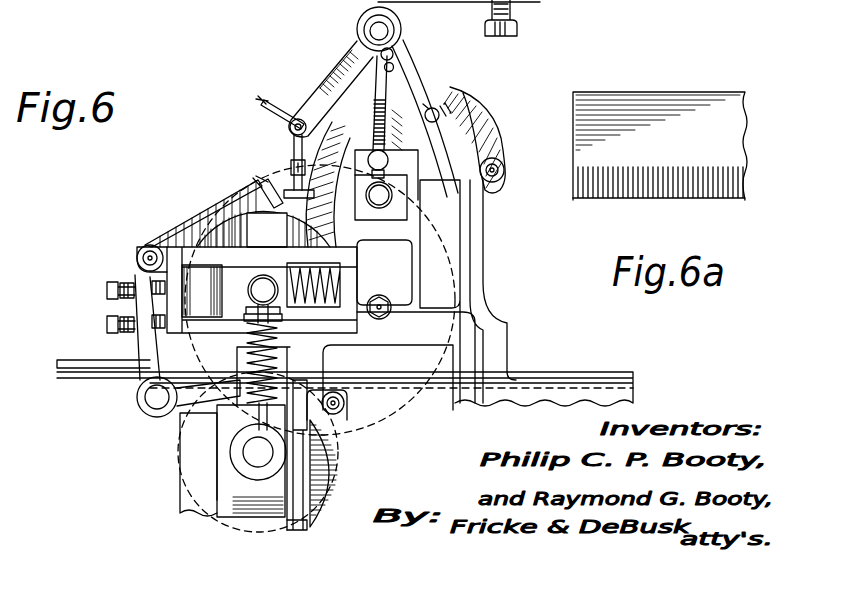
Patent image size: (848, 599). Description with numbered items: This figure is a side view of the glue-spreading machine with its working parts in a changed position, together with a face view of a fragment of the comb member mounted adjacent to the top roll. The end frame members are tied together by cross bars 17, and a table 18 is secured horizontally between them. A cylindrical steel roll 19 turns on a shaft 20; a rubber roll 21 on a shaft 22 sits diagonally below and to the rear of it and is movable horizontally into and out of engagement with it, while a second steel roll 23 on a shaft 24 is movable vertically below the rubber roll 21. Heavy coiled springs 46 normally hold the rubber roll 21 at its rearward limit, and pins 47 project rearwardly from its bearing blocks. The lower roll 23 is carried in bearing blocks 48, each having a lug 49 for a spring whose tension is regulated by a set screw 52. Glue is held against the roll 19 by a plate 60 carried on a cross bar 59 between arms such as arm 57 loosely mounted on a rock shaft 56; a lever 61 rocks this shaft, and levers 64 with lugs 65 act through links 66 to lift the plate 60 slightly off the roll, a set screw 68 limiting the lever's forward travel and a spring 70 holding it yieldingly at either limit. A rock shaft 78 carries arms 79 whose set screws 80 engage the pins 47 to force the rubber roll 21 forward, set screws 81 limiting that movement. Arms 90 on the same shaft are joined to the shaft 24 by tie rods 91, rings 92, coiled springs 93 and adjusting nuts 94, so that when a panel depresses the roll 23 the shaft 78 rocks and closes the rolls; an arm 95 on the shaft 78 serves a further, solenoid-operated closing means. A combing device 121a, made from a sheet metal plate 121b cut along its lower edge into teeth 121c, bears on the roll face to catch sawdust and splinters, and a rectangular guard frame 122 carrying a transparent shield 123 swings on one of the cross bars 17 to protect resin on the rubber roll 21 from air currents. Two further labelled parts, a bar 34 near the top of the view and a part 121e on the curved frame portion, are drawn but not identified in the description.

In FIG. 6, the cross bars 17 is at (505, 162).
In FIG. 6, the table 18 is at (619, 352).
In FIG. 6, the cylindrical roll 19 is at (323, 97).
In FIG. 6, the shaft 20 is at (379, 206).
In FIG. 6, the rubber roll 21 is at (228, 214).
In FIG. 6, the shaft 22 is at (268, 284).
In FIG. 6, the second cylindrical steel roll 23 is at (340, 450).
In FIG. 6, the shaft 24 is at (254, 448).
In FIG. 6, the bar 34 is at (410, 2).
In FIG. 6, the coiled springs 46 is at (340, 284).
In FIG. 6, the pins 47 is at (208, 279).
In FIG. 6, the bearing blocks 48 is at (240, 487).
In FIG. 6, the lug 49 is at (262, 490).
In FIG. 6, the set screw 52 is at (518, 12).
In FIG. 6, the rock shaft 56 is at (377, 31).
In FIG. 6, the arm 57 is at (296, 100).
In FIG. 6, the cross bar 59 is at (284, 126).
In FIG. 6, the plate 60 is at (295, 120).
In FIG. 6, the lever 61 is at (400, 88).
In FIG. 6, the levers 64 is at (358, 62).
In FIG. 6, the lug 65 is at (286, 192).
In FIG. 6, the links 66 is at (292, 153).
In FIG. 6, the set screw 68 is at (445, 112).
In FIG. 6, the spring 70 is at (380, 133).
In FIG. 6, the rock shaft 78 is at (147, 394).
In FIG. 6, the arms 79 is at (147, 353).
In FIG. 6, the set screws 80 is at (108, 288).
In FIG. 6, the set screws 81 is at (108, 322).
In FIG. 6, the arms 90 is at (198, 398).
In FIG. 6, the tie rods 91 is at (253, 303).
In FIG. 6, the rings 92 is at (270, 468).
In FIG. 6, the coiled springs 93 is at (246, 330).
In FIG. 6, the nuts 94 is at (343, 360).
In FIG. 6, the arm 95 is at (183, 437).
In FIG. 6A, the combing device 121a is at (687, 87).
In FIG. 6A, the plate 121b is at (583, 152).
In FIG. 6A, the teeth 121c is at (736, 200).
In FIG. 6, the arc band 121e is at (487, 124).
In FIG. 6, the rectangular frame 122 is at (262, 205).
In FIG. 6, the shield 123 is at (190, 222).